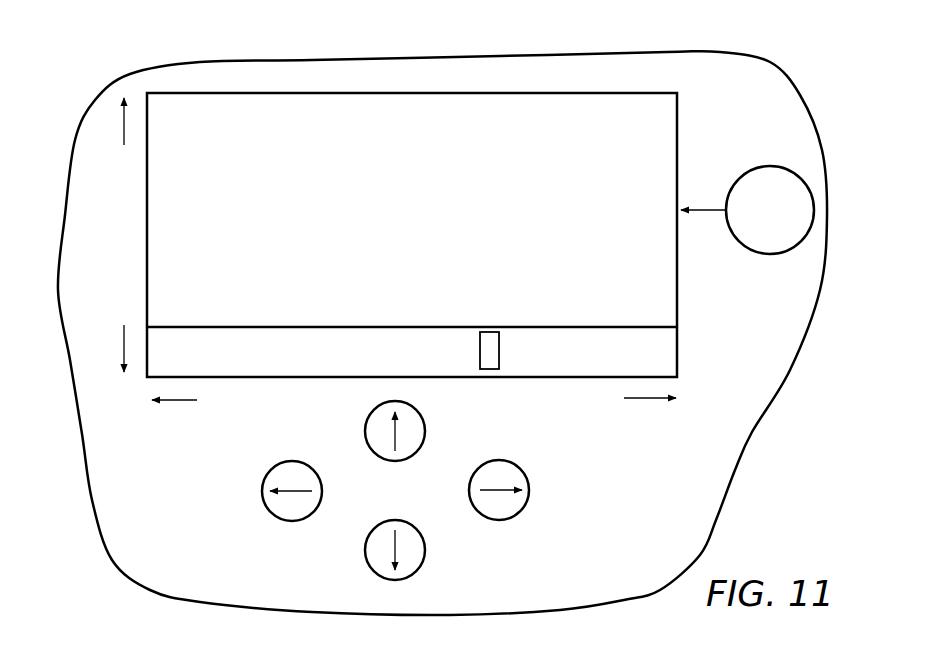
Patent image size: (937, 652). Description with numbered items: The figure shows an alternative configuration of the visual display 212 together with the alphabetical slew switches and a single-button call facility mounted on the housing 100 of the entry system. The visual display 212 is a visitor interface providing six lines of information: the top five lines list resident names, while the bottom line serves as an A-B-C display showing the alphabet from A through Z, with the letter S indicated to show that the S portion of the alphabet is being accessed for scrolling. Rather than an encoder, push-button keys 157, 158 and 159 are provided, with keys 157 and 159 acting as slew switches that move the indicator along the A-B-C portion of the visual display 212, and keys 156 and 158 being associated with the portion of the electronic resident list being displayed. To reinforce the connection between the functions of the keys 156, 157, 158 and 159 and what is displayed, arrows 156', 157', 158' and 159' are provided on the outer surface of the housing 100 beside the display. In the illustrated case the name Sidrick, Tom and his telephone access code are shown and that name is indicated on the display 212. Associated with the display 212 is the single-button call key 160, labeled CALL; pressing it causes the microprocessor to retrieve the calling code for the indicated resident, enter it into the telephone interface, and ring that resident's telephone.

The housing 100 is at (746, 78).
The visual display 212 is at (563, 111).
The arrow 156' is at (80, 105).
The arrow 158' is at (73, 365).
The arrow 157' is at (158, 425).
The arrow 159' is at (668, 423).
The single-button call key 160 is at (768, 167).
The push-button key 156 is at (426, 428).
The push-button key 158 is at (427, 555).
The push-button key 157 is at (277, 474).
The push-button key 159 is at (514, 473).